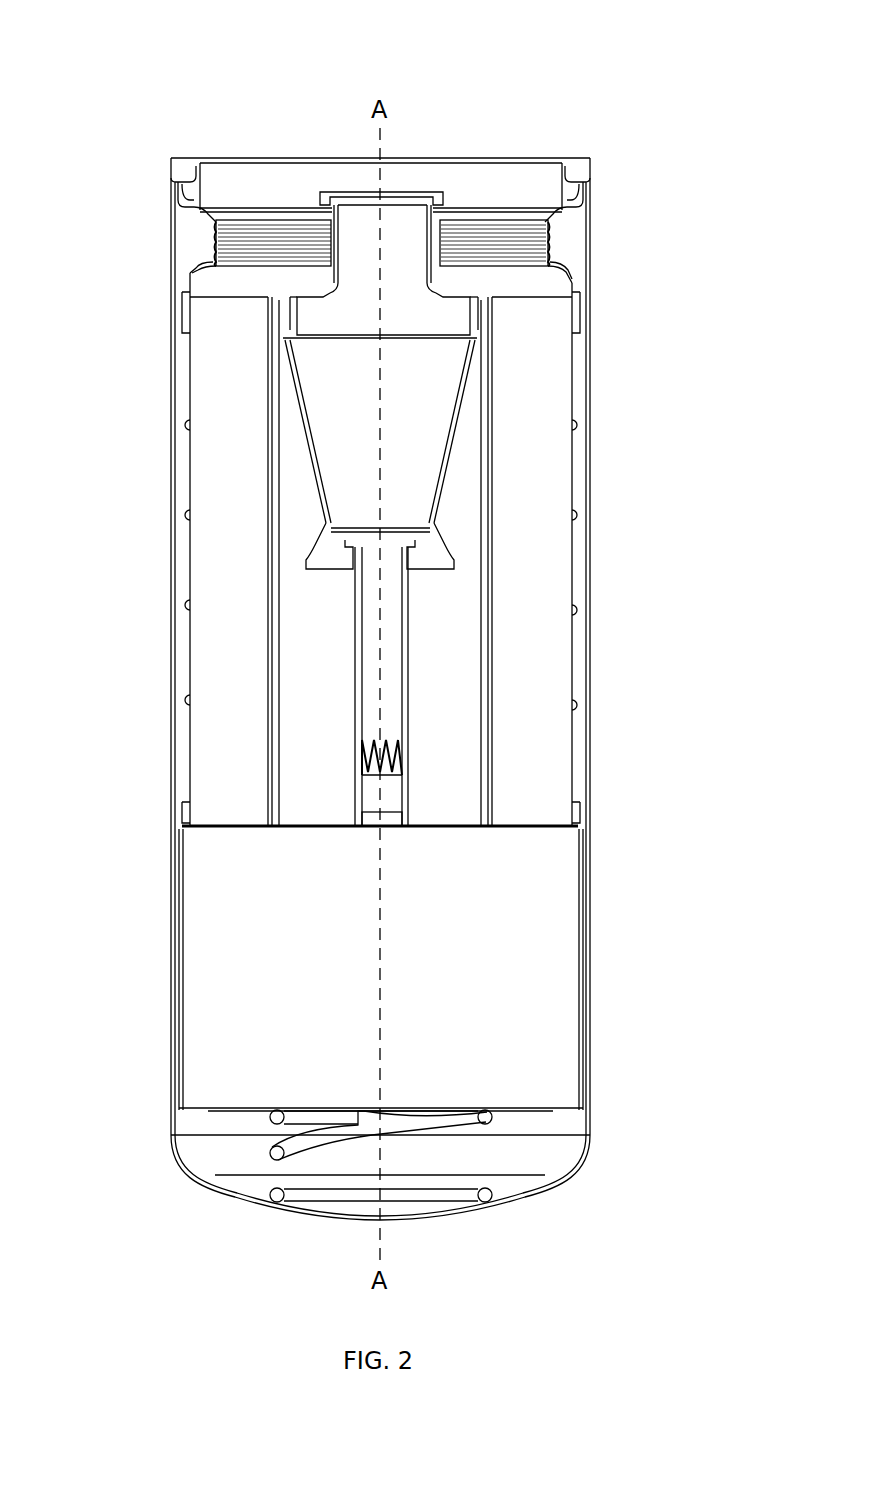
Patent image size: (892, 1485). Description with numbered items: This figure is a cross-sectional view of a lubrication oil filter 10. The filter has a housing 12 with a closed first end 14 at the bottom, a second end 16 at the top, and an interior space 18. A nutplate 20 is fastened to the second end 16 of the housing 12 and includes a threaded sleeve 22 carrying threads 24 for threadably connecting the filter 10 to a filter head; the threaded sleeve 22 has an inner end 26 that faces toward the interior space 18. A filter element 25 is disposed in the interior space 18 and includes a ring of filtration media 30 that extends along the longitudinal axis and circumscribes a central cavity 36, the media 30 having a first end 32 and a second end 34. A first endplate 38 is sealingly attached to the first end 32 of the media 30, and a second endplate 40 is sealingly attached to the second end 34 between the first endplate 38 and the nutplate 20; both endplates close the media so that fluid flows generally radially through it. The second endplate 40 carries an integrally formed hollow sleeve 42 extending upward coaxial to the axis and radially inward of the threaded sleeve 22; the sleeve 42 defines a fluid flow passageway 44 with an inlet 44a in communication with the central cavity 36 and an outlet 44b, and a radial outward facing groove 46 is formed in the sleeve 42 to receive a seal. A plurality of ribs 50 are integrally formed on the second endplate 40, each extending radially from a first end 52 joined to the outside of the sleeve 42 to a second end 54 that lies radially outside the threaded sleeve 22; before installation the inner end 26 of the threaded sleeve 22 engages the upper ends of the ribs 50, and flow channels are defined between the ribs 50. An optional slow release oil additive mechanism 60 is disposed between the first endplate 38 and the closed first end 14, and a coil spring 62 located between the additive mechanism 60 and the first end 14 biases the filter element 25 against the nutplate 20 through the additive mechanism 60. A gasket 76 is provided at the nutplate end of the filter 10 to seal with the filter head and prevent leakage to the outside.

The lubrication oil filter 10 is at (592, 92).
The housing 12 is at (590, 622).
The closed first end 14 is at (510, 1205).
The second end 16 is at (178, 225).
The interior space 18 is at (180, 494).
The nutplate 20 is at (584, 214).
The threaded sleeve 22 is at (180, 245).
The threads 24 is at (225, 222).
The filter element 25 is at (547, 564).
The inner end 26 is at (186, 268).
The filtration media 30 is at (548, 467).
The first end 32 is at (545, 825).
The second end 34 is at (543, 308).
The central cavity 36 is at (298, 732).
The first endplate 38 is at (205, 828).
The second endplate 40 is at (218, 302).
The sleeve 42 is at (350, 232).
The fluid flow passageway 44 is at (402, 232).
The inlet 44a is at (346, 290).
The outlet 44b is at (388, 200).
The radial outward facing groove 46 is at (444, 206).
The ribs 50 is at (512, 286).
The first end 52 is at (425, 290).
The second end 54 is at (570, 279).
The slow release oil additive mechanism 60 is at (535, 965).
The coil spring 62 is at (262, 1212).
The gasket 76 is at (596, 170).